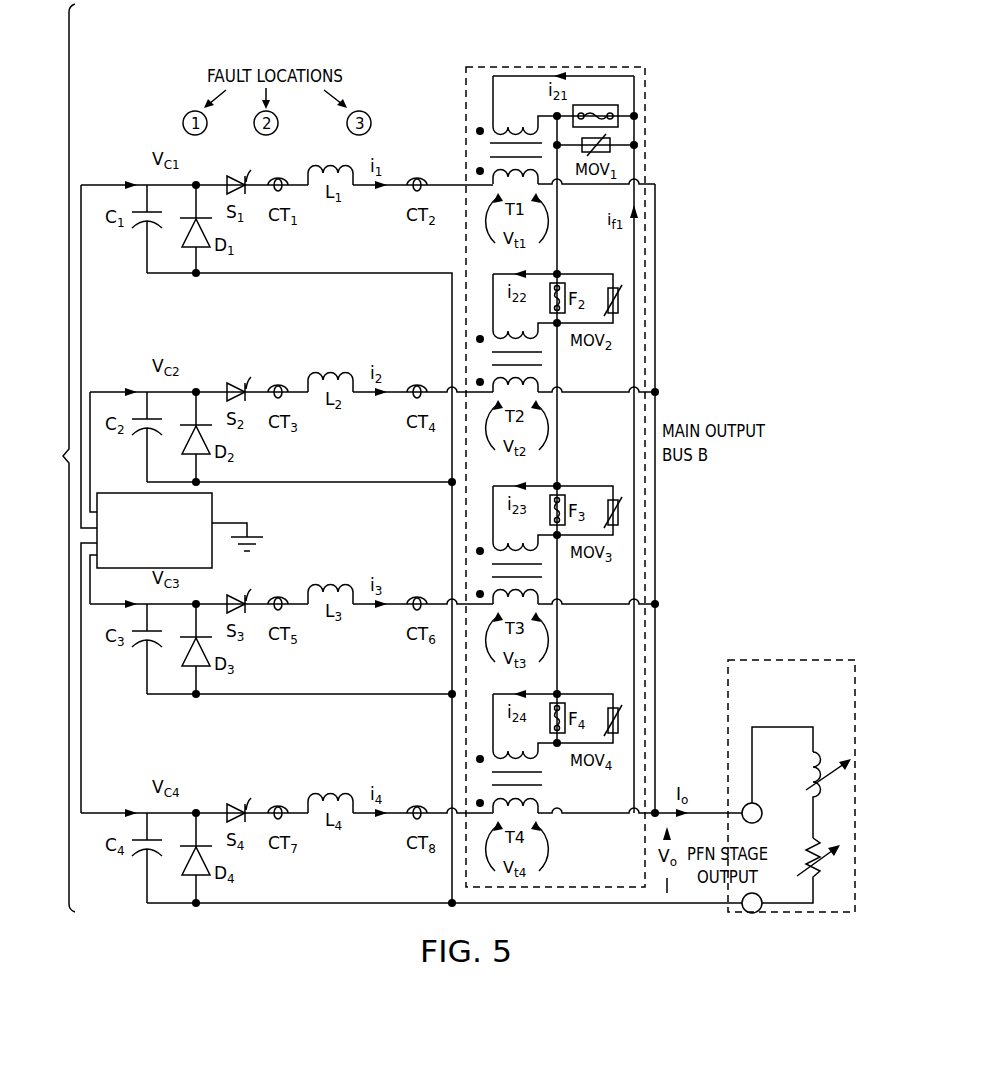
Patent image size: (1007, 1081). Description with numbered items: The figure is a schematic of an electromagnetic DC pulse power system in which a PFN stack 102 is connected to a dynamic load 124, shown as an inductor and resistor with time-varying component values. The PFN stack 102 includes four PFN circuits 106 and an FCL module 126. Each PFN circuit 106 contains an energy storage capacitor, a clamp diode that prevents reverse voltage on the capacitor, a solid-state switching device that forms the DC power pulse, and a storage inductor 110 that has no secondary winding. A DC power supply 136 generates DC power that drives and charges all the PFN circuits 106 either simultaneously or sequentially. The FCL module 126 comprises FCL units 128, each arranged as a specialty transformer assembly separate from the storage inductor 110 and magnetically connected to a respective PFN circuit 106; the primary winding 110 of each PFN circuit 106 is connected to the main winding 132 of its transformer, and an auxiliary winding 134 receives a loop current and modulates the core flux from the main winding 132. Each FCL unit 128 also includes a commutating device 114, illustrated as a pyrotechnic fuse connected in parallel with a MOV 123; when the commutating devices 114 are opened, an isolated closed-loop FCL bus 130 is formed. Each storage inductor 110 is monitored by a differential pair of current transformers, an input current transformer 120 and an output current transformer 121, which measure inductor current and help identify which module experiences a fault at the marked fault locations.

The PFN stack 102 is at (54, 458).
The PFN circuit 106 is at (212, 386).
The storage inductor 110 is at (338, 171).
The commutating device 114 is at (562, 273).
The input current transformer 120 is at (290, 177).
The output current transformer 121 is at (410, 178).
The MOV 123 is at (612, 148).
The dynamic load 124 is at (803, 653).
The FCL module 126 is at (644, 66).
The FCL unit 128 is at (636, 130).
The FCL bus 130 is at (636, 322).
The main winding 132 is at (490, 170).
The auxiliary winding 134 is at (490, 120).
The DC power supply 136 is at (212, 512).